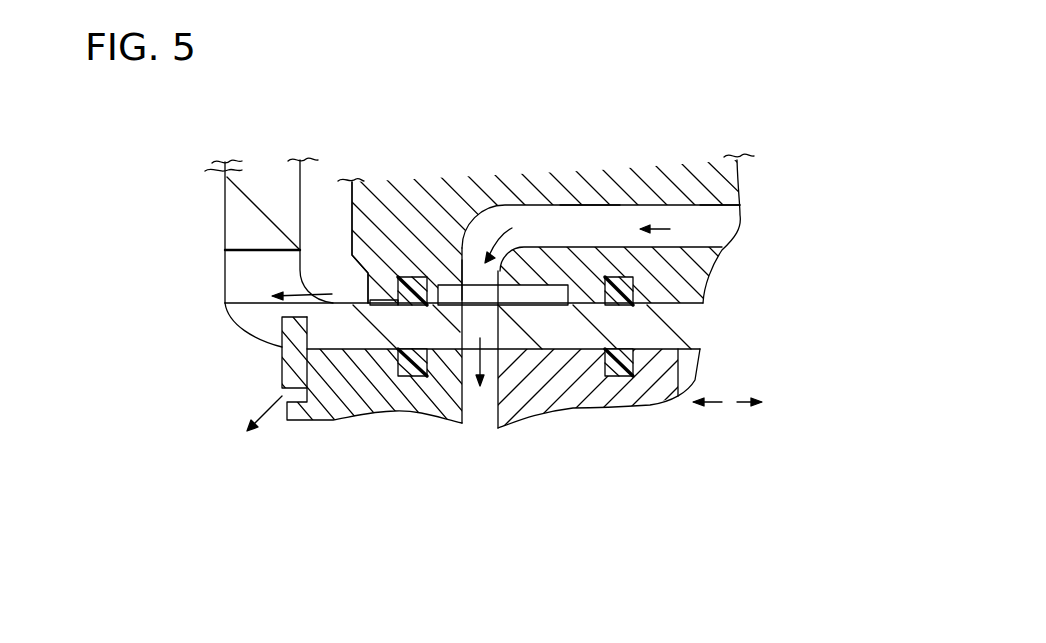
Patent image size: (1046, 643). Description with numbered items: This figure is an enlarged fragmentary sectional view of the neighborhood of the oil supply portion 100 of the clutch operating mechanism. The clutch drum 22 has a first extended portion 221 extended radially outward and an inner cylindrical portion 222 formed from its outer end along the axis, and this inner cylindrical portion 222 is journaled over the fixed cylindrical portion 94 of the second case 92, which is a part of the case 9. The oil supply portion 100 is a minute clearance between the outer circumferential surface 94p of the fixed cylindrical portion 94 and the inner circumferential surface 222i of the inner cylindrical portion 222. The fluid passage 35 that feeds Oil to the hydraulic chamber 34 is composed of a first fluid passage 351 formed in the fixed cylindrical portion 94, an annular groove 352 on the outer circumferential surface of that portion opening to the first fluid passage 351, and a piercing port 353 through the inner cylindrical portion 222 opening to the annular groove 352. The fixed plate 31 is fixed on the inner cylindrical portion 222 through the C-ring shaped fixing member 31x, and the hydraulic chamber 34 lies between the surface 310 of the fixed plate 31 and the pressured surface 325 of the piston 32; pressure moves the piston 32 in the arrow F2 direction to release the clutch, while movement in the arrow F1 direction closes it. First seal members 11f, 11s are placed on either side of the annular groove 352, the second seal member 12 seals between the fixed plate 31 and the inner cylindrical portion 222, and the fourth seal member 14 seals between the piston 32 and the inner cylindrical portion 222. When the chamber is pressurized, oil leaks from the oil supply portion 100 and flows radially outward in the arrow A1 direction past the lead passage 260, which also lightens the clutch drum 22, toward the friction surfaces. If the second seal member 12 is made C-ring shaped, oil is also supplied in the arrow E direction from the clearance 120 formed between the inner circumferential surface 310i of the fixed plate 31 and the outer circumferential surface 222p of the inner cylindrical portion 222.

The oil supply portion 100 is at (362, 298).
The case 9 is at (360, 242).
The second case 92 is at (685, 165).
The fixed cylindrical portion 94 is at (738, 162).
The outer circumferential surface 94p is at (368, 350).
The fluid passage 35 is at (722, 228).
The first fluid passage 351 is at (707, 223).
The annular groove 352 is at (547, 297).
The piercing port 353 is at (488, 335).
The oil Oil is at (658, 229).
The clutch drum 22 is at (224, 166).
The first extended portion 221 is at (225, 194).
The inner cylindrical portion 222 is at (337, 329).
The inner circumferential surface 222i is at (380, 300).
The outer circumferential surface 222p is at (380, 340).
The lead passage 260 is at (233, 262).
The arrow A1 direction A1 is at (323, 290).
The first seal member 11f is at (413, 277).
The first seal member 11s is at (617, 277).
The second seal member 12 is at (408, 378).
The fourth seal member 14 is at (619, 377).
The fixed plate 31 is at (354, 351).
The fixing member 31x is at (292, 378).
The surface 310 is at (472, 420).
The inner circumferential surface 310i is at (304, 349).
The clearance 120 is at (348, 352).
The piston 32 is at (656, 400).
The pressured surface 325 is at (490, 405).
The hydraulic chamber 34 is at (481, 407).
The arrow E direction E is at (268, 420).
The arrow F1 direction F1 is at (712, 402).
The arrow F2 direction F2 is at (740, 402).